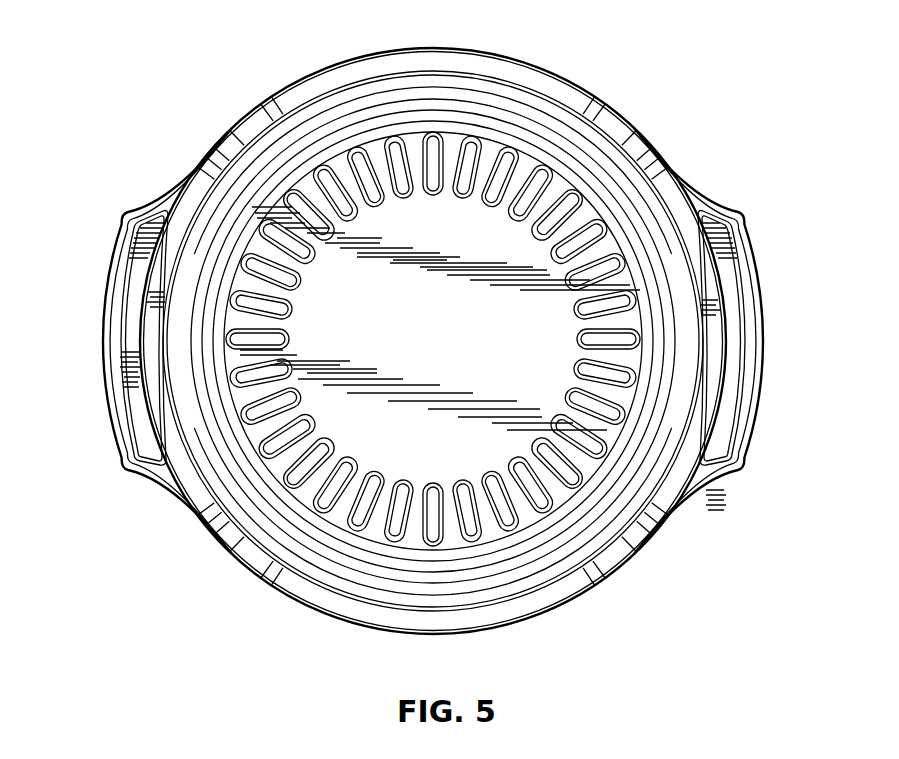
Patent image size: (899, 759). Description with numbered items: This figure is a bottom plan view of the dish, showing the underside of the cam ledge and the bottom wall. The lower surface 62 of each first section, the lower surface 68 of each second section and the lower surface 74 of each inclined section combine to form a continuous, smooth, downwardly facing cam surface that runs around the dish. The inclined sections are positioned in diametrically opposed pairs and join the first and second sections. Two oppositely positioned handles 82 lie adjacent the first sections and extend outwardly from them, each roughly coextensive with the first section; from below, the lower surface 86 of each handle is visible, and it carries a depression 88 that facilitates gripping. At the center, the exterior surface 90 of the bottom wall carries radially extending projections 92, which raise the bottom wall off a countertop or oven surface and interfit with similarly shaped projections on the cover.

The lower surface of first section 62 is at (687, 242).
The lower surface of second section 68 is at (457, 63).
The lower surface of inclined section 74 is at (222, 160).
The handle 82 is at (120, 223).
The lower surface of handle 86 is at (106, 345).
The depression 88 is at (128, 410).
The exterior surface of bottom wall 90 is at (447, 329).
The radially extending projections 92 is at (486, 201).